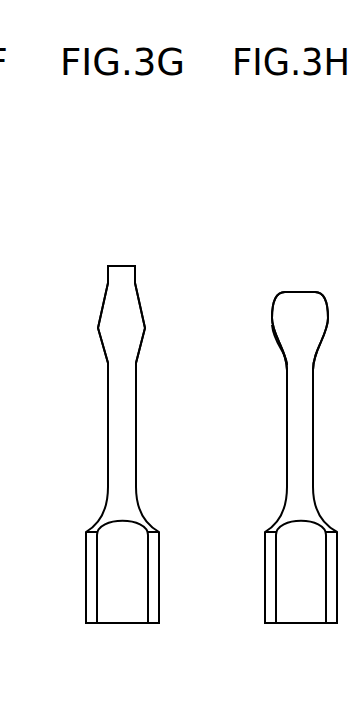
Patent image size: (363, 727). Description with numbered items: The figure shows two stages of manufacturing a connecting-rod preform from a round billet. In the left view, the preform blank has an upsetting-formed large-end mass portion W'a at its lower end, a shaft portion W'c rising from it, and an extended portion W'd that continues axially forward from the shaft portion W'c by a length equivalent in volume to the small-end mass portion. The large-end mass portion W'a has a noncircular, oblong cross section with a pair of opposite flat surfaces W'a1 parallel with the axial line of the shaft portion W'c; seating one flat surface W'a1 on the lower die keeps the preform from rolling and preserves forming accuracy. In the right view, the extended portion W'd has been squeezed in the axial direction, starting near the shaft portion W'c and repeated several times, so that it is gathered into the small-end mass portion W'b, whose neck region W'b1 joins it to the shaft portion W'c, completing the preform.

In FIG. 3G, the extended portion W'd is at (91, 317).
In FIG. 3G, the shaft portion W'c is at (87, 425).
In FIG. 3H, the shaft portion W'c is at (270, 422).
In FIG. 3G, the large-end mass portion W'a is at (94, 571).
In FIG. 3H, the large-end mass portion W'a is at (272, 572).
In FIG. 3G, the flat surface W'a1 is at (136, 603).
In FIG. 3H, the flat surface W'a1 is at (311, 603).
In FIG. 3H, the small-end mass portion W'b is at (276, 307).
In FIG. 3H, the neck (tapered) portion below head W'b1 is at (246, 345).